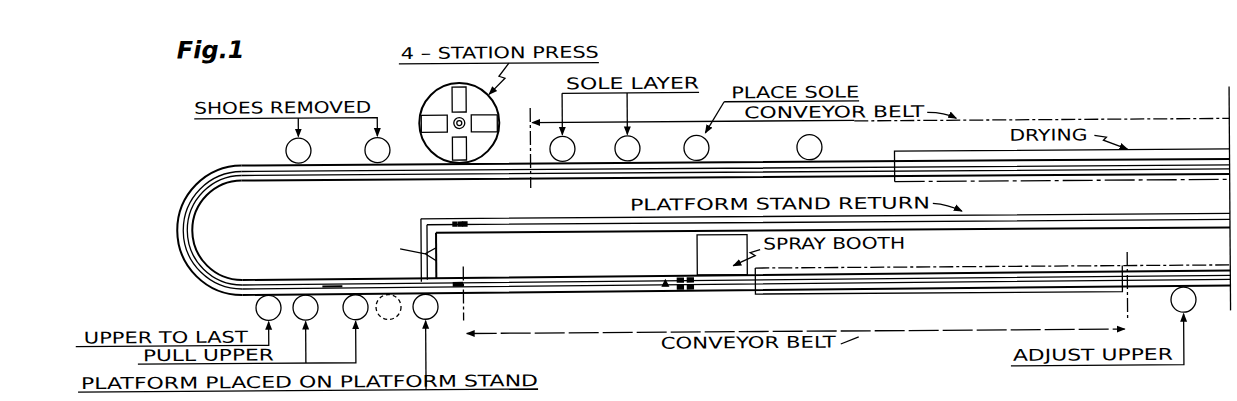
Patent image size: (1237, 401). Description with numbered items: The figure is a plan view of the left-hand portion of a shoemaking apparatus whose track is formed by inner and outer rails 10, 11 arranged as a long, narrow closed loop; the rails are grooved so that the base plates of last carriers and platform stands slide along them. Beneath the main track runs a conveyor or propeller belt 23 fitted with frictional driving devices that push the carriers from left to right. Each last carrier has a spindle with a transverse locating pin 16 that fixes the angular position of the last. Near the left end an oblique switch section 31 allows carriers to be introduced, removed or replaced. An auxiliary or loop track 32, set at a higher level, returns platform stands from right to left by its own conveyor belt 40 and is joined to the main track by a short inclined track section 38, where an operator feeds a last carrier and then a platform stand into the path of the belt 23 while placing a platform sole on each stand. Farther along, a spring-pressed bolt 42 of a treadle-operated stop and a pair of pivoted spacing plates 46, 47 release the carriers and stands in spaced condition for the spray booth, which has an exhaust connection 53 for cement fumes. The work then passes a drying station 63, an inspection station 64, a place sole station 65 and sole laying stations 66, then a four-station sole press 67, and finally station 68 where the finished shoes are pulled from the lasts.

The inner rail 10 is at (251, 165).
The outer rail 11 is at (247, 182).
The transverse locating pin 16 is at (312, 289).
The conveyor or propeller belt 23 is at (490, 290).
The oblique switch section 31 is at (330, 287).
The auxiliary or loop track 32 is at (1033, 226).
The inclined track section 38 is at (407, 250).
The conveyor or propeller belt 40 is at (461, 224).
The bolt 42 is at (661, 291).
The spacing plate 46 is at (683, 294).
The spacing plate 47 is at (683, 282).
The exhaust connection 53 is at (697, 246).
The drying station 63 is at (1168, 156).
The inspection station 64 is at (824, 151).
The place sole station 65 is at (710, 151).
The sole laying stations 66 is at (571, 153).
The 4-station sole press 67 is at (490, 103).
The last pulling station 68 is at (368, 142).